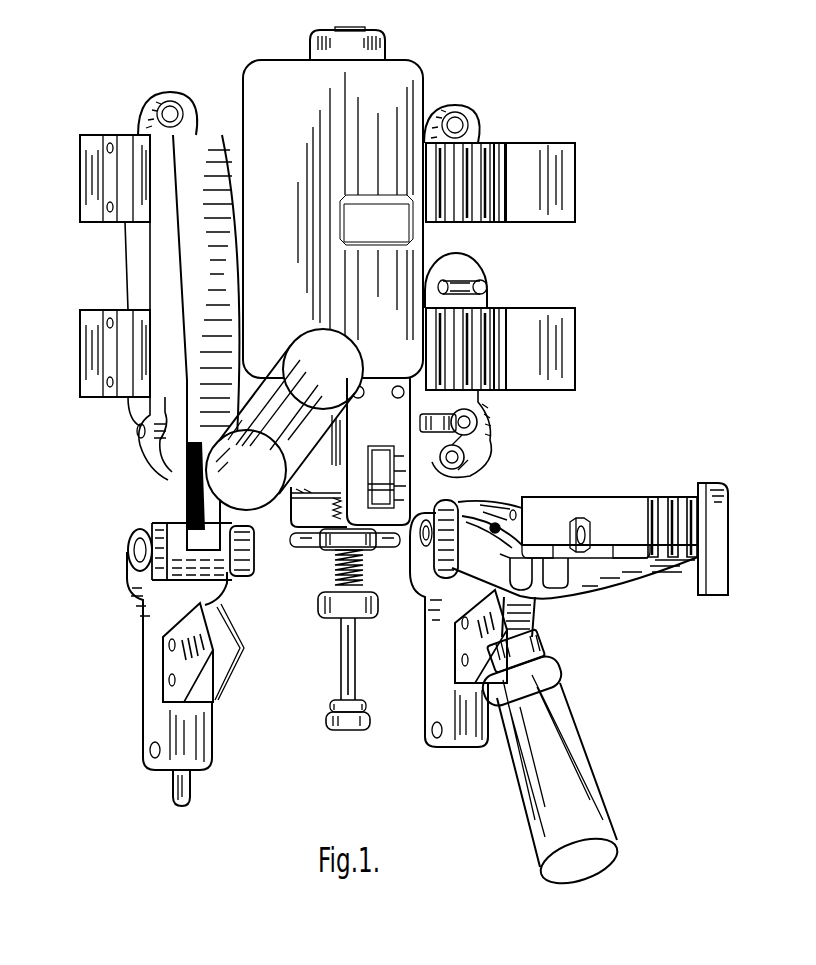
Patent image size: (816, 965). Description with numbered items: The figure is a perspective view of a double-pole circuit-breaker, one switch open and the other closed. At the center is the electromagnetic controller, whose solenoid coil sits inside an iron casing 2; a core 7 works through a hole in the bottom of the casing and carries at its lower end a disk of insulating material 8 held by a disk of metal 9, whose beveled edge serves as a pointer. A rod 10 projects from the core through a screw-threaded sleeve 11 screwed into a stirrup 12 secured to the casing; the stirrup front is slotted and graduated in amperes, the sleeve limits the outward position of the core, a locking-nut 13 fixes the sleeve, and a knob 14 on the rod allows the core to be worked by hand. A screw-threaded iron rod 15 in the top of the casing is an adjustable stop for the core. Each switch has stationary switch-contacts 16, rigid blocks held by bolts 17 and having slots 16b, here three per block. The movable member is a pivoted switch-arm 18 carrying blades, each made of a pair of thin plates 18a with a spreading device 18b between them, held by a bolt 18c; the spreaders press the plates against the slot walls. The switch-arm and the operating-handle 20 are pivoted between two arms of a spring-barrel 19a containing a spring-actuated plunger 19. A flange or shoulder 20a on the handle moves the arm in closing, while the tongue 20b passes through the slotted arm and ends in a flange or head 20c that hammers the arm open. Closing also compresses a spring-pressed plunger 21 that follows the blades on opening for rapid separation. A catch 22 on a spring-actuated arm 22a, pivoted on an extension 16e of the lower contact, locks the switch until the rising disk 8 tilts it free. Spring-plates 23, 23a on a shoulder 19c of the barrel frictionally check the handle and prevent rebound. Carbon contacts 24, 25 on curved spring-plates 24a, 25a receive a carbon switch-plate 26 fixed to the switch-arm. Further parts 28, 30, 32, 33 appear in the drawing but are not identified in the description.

The iron casing 2 is at (262, 96).
The core 7 is at (343, 452).
The disk of insulating material 8 is at (296, 500).
The disk of metal 9 is at (320, 504).
The rod 10 is at (341, 660).
The screw-threaded sleeve 11 is at (336, 576).
The stirrup 12 is at (310, 525).
The locking-nut 13 is at (324, 550).
The knob 14 is at (326, 723).
The screw-threaded iron rod 15 is at (347, 32).
The stationary switch-contacts 16 is at (482, 175).
The slots 16b is at (494, 215).
The extension 16e is at (514, 410).
The bolts 17 is at (150, 114).
The switch-arm 18 is at (172, 488).
The plates 18a is at (628, 505).
The spreading device 18b is at (655, 600).
The bolt 18c is at (578, 518).
The spring-actuated plunger 19 is at (462, 685).
The spring-barrel 19a is at (148, 610).
The shoulder 19c is at (200, 694).
The operating-handle 20 is at (570, 752).
The flange or shoulder 20a is at (207, 509).
The tongue 20b is at (506, 540).
The flange or head 20c is at (513, 509).
The spring-pressed plunger 21 is at (488, 288).
The catch 22 is at (488, 440).
The spring-actuated arm 22a is at (458, 468).
The spring-plate 23 is at (170, 663).
The spring-plate 23a is at (222, 680).
The carbon contact 24 is at (138, 163).
The curved spring-plate 24a is at (86, 196).
The carbon contact 25 is at (560, 348).
The curved spring-plate 25a is at (86, 386).
The carbon switch-plate 26 is at (140, 270).
The handle neck 28 is at (532, 615).
The bracket 30 is at (412, 562).
The mounting hole 32 is at (150, 750).
The tab 33 is at (176, 787).